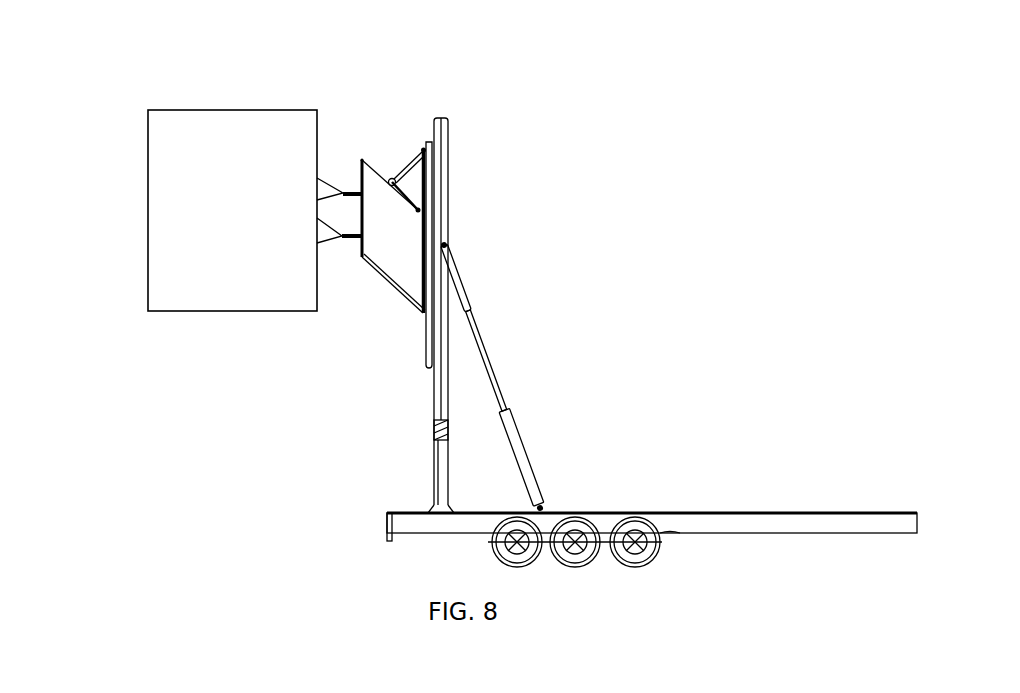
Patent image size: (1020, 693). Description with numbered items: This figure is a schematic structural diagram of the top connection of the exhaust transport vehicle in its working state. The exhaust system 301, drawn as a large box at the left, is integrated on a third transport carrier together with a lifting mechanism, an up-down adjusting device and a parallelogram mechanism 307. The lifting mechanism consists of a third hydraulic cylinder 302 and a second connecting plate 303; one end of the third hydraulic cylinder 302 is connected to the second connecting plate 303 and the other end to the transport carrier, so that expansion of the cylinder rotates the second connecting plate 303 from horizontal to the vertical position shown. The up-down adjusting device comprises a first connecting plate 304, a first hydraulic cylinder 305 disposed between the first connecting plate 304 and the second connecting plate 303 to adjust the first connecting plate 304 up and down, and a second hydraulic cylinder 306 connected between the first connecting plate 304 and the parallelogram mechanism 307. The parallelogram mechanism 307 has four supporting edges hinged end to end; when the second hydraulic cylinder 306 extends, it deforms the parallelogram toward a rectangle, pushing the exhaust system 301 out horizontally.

The exhaust system 301 is at (148, 165).
The third hydraulic cylinder 302 is at (518, 433).
The second connecting plate 303 is at (437, 395).
The first connecting plate 304 is at (422, 150).
The first hydraulic cylinder 305 is at (427, 343).
The second hydraulic cylinder 306 is at (398, 177).
The parallelogram mechanism 307 is at (393, 290).